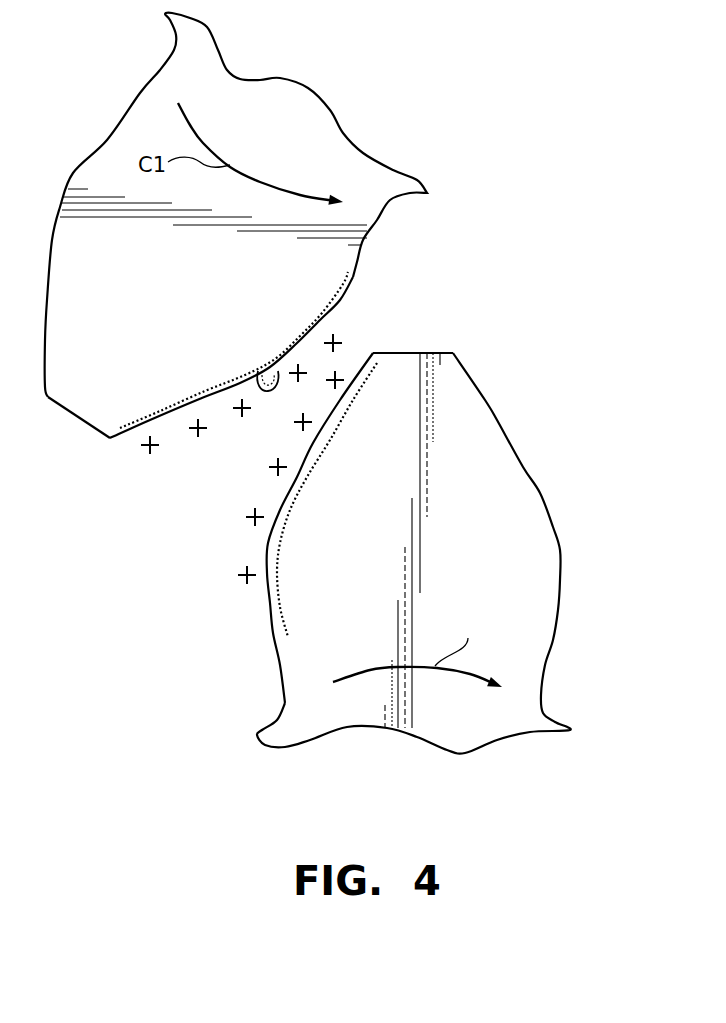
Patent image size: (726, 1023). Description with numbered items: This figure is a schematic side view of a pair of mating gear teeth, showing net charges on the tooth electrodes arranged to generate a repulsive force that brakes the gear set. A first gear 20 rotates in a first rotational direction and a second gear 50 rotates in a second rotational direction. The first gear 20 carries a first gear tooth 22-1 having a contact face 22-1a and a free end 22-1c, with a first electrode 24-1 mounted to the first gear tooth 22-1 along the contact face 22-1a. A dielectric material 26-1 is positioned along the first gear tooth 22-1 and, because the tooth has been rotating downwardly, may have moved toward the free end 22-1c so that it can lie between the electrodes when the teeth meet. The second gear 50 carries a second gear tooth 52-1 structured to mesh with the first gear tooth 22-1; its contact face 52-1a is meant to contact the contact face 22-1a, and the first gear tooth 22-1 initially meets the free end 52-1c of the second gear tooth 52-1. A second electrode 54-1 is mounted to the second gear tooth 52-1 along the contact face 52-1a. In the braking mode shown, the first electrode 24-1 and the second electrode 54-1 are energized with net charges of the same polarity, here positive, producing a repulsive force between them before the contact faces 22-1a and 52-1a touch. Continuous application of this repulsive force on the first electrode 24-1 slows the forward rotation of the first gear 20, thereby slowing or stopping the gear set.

The first gear 20 is at (280, 133).
The first gear tooth 22-1 is at (188, 76).
The contact face of the first gear tooth 22-1a is at (352, 279).
The free end of the first gear tooth 22-1c is at (68, 410).
The first electrode 24-1 is at (285, 352).
The dielectric material 26-1 is at (265, 391).
The second gear 50 is at (467, 727).
The second gear tooth 52-1 is at (512, 506).
The contact face of the second gear tooth 52-1a is at (267, 590).
The free end of the second gear tooth 52-1c is at (415, 352).
The second electrode 54-1 is at (292, 528).